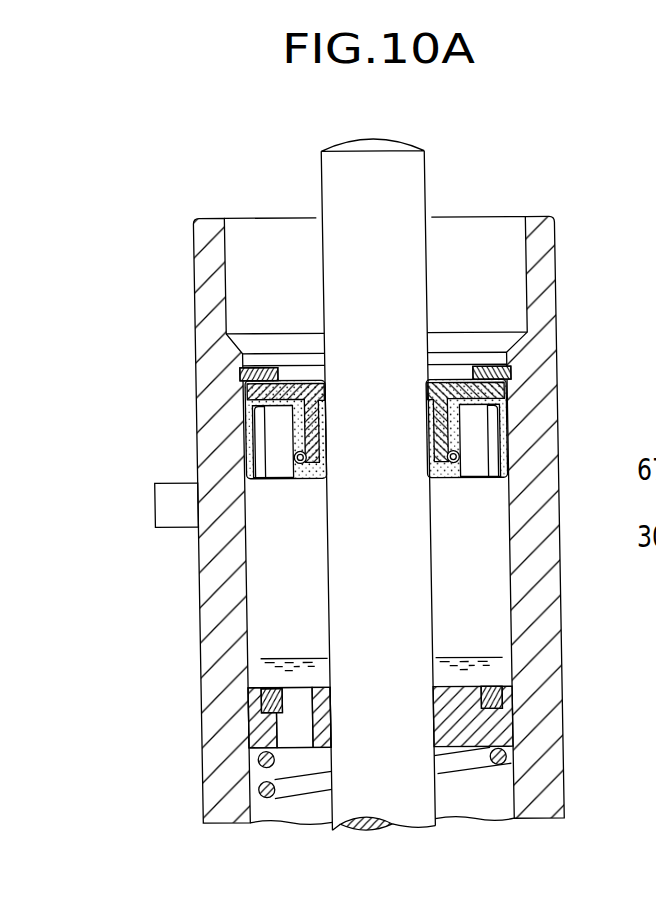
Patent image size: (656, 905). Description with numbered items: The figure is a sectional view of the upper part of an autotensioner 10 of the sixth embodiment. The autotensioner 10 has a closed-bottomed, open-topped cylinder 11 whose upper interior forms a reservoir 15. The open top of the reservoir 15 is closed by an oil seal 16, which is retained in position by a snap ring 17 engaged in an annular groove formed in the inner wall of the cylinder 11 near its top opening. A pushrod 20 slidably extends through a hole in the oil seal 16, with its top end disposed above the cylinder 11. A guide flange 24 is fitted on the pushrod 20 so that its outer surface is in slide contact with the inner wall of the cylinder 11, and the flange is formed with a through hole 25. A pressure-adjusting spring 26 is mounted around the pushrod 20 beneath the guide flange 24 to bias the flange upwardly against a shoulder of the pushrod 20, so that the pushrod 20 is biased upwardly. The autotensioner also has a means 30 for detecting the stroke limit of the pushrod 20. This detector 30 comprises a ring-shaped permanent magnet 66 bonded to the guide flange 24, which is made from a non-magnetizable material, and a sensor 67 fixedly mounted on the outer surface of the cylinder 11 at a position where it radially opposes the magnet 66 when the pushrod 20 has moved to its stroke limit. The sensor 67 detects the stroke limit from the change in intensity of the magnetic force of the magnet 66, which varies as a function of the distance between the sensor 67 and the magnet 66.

The autotensioner 10 is at (192, 203).
The cylinder 11 is at (203, 293).
The reservoir 15 is at (268, 806).
The oil seal 16 is at (507, 397).
The snap ring 17 is at (513, 367).
The pushrod 20 is at (425, 797).
The guide flange 24 is at (381, 683).
The through hole 25 is at (287, 722).
The pressure-adjusting spring 26 is at (478, 763).
The means for detecting the stroke limit 30 is at (132, 467).
The ring-shaped permanent magnet 66 is at (268, 690).
The sensor 67 is at (173, 487).